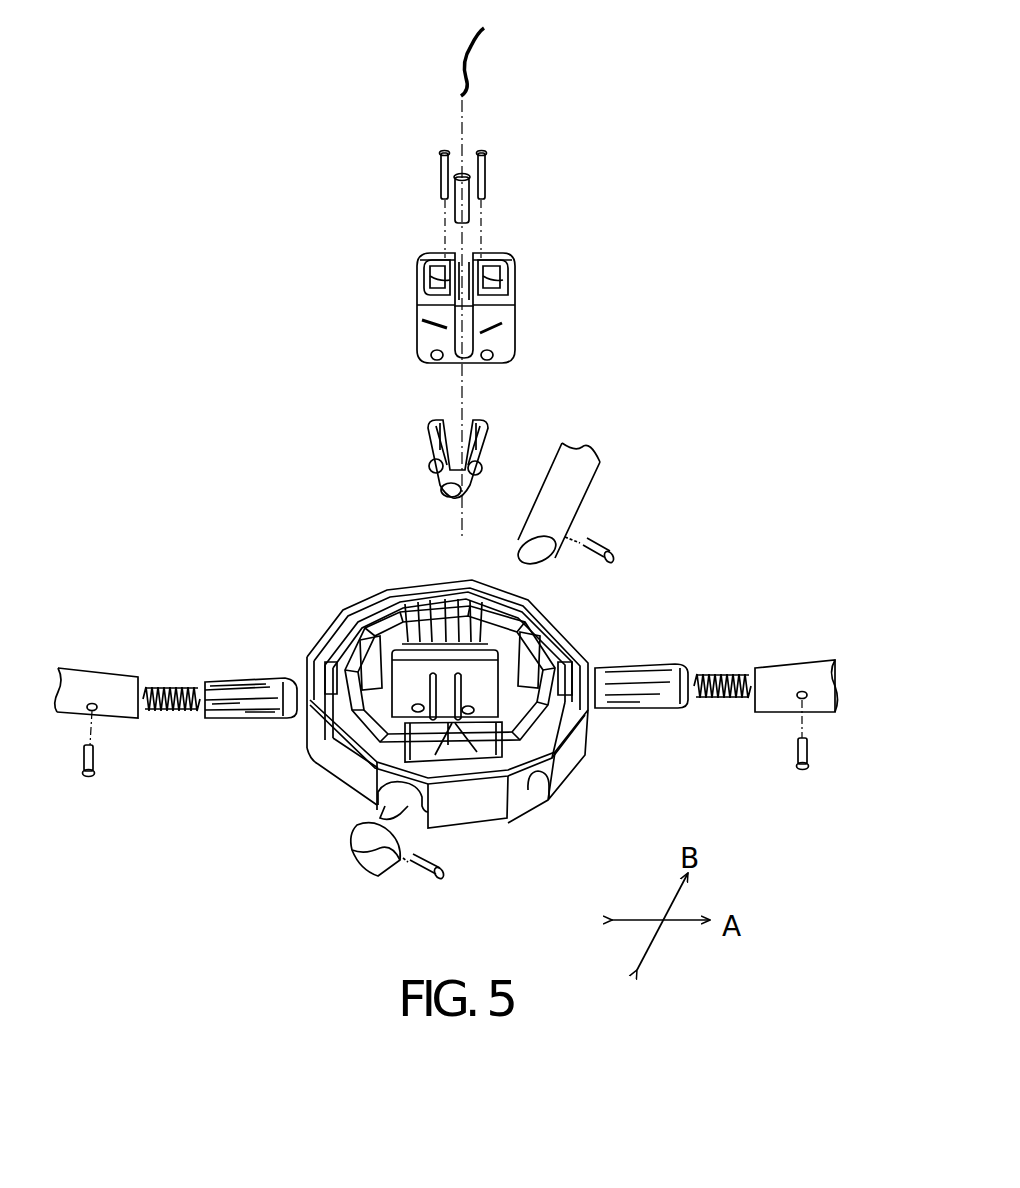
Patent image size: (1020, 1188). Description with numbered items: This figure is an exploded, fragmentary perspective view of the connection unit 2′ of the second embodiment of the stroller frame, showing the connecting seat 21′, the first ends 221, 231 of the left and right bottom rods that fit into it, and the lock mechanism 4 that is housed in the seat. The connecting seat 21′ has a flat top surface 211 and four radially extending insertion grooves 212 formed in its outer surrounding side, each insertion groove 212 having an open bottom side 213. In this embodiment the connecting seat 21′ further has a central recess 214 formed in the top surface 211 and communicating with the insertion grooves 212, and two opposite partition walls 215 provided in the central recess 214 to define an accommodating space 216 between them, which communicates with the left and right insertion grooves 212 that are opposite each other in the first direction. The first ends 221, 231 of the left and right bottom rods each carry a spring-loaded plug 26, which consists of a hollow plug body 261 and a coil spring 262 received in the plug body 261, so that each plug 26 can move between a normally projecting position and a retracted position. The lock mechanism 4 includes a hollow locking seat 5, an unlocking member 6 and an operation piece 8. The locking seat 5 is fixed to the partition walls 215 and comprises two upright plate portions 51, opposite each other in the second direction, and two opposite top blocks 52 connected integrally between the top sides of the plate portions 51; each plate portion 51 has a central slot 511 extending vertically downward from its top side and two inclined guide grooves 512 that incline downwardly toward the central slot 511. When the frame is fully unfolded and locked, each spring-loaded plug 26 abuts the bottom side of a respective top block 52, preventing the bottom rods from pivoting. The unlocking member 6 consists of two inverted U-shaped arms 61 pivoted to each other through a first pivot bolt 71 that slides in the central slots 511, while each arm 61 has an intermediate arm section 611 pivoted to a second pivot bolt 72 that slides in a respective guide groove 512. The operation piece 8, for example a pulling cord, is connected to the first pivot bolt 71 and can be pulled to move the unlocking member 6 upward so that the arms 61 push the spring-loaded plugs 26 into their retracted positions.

The connection unit 2′ is at (186, 298).
The lock mechanism 4 is at (676, 280).
The locking seat 5 is at (471, 276).
The unlocking member 6 is at (448, 442).
The operation piece 8 is at (470, 45).
The connecting seat 21′ is at (475, 693).
The spring-loaded plug 26 is at (446, 640).
The plate portion 51 is at (430, 262).
The top block 52 is at (430, 287).
The arm 61 is at (430, 480).
The first pivot bolt 71 is at (468, 178).
The second pivot bolt 72 is at (439, 155).
The top surface 211 is at (560, 718).
The insertion groove 212 is at (327, 670).
The open bottom side 213 is at (367, 803).
The central recess 214 is at (410, 612).
The partition wall 215 is at (432, 660).
The accommodating space 216 is at (473, 672).
The first end 221 is at (92, 690).
The first end 231 is at (588, 498).
The plug body 261 is at (232, 695).
The coil spring 262 is at (165, 690).
The central slot 511 is at (457, 258).
The inclined guide groove 512 is at (437, 322).
The intermediate arm section 611 is at (425, 440).